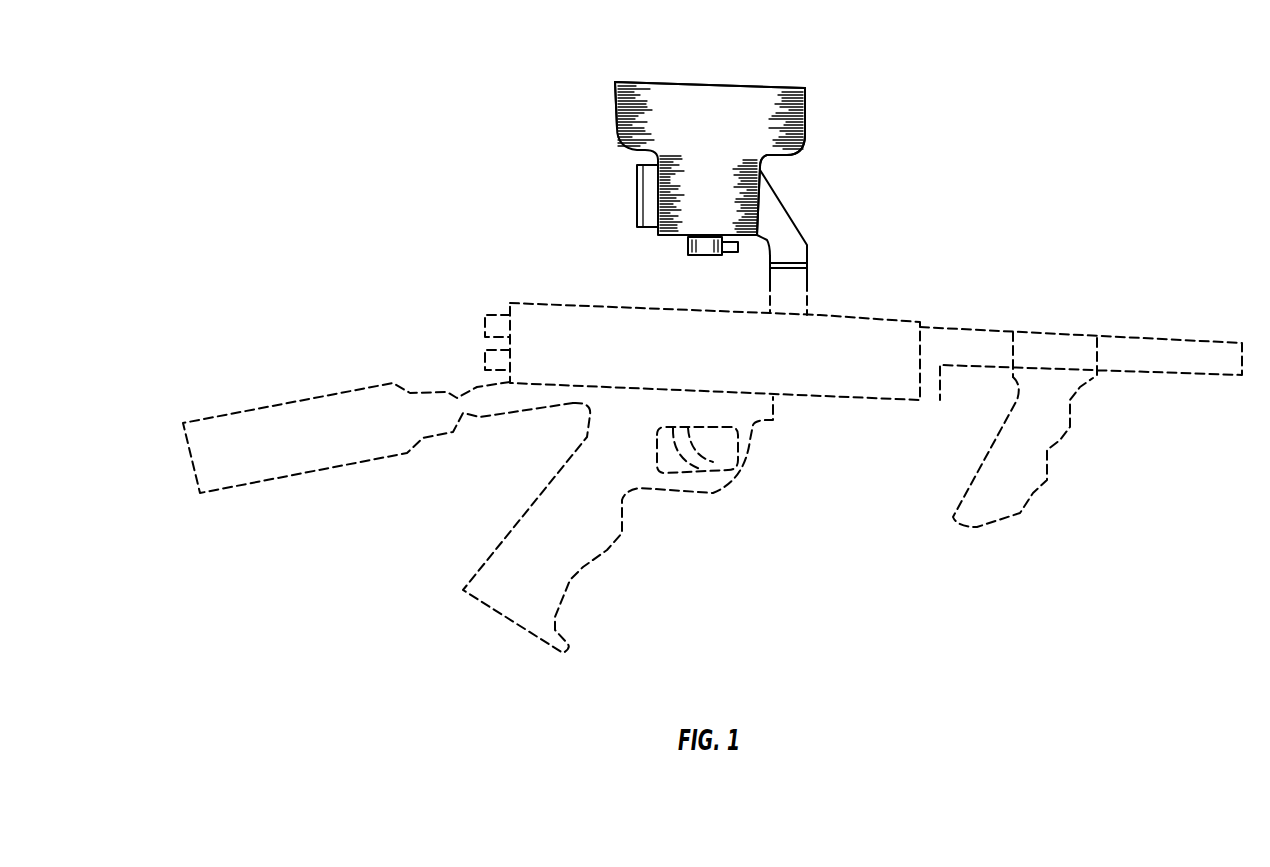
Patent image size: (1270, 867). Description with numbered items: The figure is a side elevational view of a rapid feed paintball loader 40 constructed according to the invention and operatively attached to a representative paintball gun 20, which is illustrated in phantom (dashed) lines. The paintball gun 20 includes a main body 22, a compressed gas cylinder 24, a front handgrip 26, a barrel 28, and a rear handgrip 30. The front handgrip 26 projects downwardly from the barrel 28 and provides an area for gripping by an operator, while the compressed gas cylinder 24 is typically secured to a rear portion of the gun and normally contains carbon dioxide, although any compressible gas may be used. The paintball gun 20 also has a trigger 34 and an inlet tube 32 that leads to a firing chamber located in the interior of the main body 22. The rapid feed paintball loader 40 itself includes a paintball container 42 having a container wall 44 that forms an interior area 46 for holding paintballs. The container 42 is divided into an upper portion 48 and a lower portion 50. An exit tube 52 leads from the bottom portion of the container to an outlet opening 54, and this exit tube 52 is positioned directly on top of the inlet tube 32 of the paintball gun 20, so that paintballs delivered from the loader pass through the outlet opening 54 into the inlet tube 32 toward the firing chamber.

The paintball gun 20 is at (488, 287).
The main body 22 is at (672, 307).
The compressed gas cylinder 24 is at (300, 463).
The front handgrip 26 is at (1038, 478).
The barrel 28 is at (1180, 368).
The rear handgrip 30 is at (570, 560).
The inlet tube 32 is at (777, 283).
The trigger 34 is at (693, 463).
The rapid feed paintball loader 40 is at (845, 95).
The paintball container 42 is at (653, 113).
The container wall 44 is at (613, 92).
The interior area 46 is at (712, 105).
The upper portion 48 is at (803, 137).
The lower portion 50 is at (762, 173).
The exit tube 52 is at (797, 250).
The outlet opening 54 is at (790, 273).